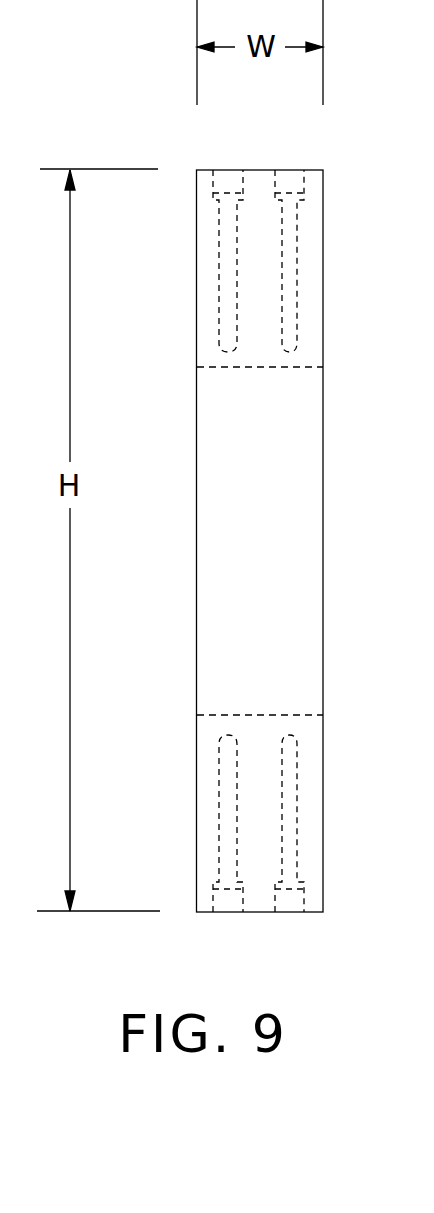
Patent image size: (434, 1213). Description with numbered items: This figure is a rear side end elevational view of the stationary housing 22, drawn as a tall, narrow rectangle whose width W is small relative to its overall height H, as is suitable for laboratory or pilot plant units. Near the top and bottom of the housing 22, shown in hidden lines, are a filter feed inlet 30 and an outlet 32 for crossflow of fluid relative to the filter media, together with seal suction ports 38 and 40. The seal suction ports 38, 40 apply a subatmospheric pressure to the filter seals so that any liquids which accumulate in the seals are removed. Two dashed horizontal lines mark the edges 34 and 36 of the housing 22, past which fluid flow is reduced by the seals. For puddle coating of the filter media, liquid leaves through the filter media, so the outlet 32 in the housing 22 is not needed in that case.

The stationary housing 22 is at (186, 531).
The filter feed inlet 30 is at (282, 914).
The outlet 32 is at (287, 173).
The edge of the housing 34 is at (255, 368).
The edge of the housing 36 is at (249, 714).
The seal suction port 38 is at (223, 914).
The seal suction port 40 is at (225, 170).